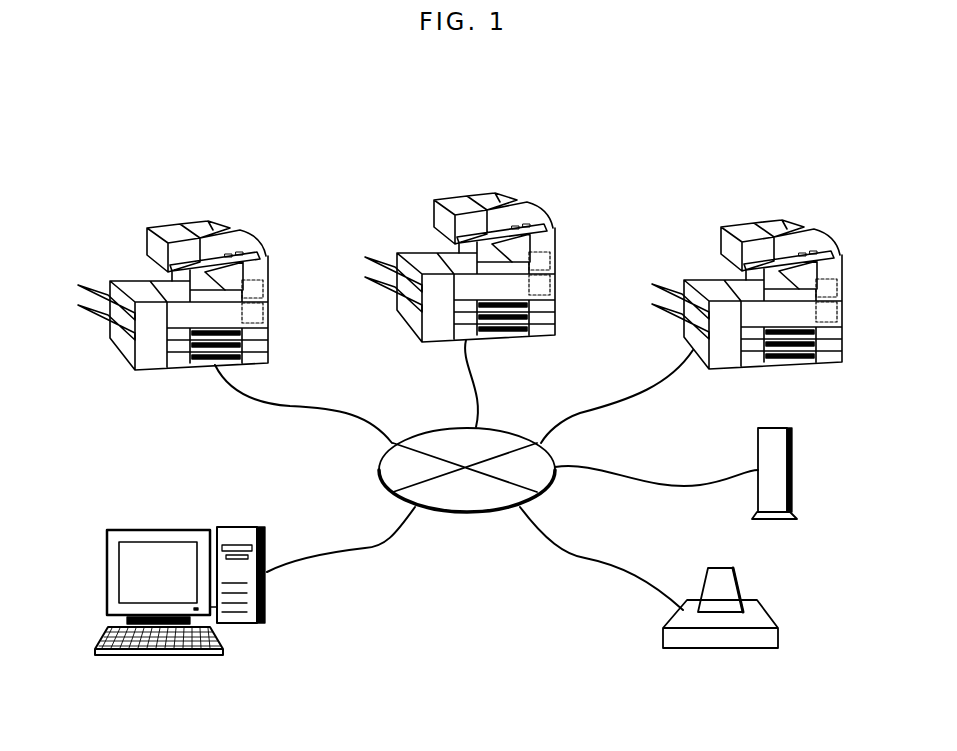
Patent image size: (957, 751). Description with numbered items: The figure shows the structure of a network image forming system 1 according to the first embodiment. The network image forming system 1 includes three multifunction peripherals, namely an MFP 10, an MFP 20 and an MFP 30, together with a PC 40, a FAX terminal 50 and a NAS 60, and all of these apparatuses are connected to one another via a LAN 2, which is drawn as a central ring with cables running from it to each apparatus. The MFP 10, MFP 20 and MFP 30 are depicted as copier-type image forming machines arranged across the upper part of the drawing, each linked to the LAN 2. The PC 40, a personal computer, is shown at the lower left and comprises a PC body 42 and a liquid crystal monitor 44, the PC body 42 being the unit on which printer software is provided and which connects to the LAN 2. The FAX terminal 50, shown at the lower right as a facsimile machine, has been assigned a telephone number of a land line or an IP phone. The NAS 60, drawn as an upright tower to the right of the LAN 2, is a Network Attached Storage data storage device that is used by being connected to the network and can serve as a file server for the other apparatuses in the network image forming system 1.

The network image forming system 1 is at (450, 118).
The LAN 2 is at (468, 514).
The MFP 10 is at (267, 226).
The MFP 20 is at (555, 203).
The MFP 30 is at (841, 229).
The PC 40 is at (180, 539).
The PC body 42 is at (241, 548).
The liquid crystal monitor 44 is at (158, 530).
The FAX terminal 50 is at (757, 569).
The NAS 60 is at (785, 426).